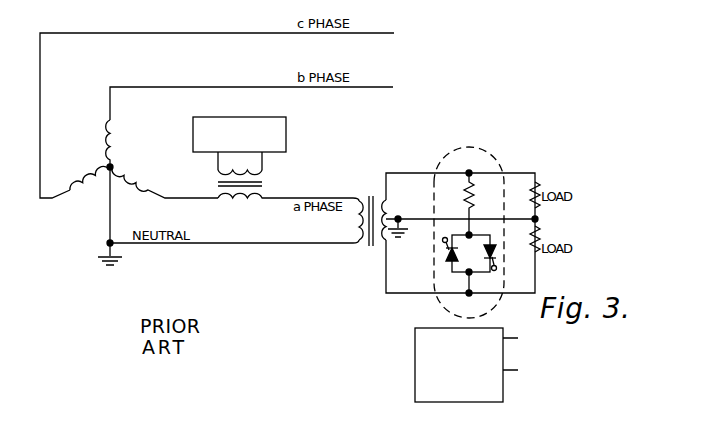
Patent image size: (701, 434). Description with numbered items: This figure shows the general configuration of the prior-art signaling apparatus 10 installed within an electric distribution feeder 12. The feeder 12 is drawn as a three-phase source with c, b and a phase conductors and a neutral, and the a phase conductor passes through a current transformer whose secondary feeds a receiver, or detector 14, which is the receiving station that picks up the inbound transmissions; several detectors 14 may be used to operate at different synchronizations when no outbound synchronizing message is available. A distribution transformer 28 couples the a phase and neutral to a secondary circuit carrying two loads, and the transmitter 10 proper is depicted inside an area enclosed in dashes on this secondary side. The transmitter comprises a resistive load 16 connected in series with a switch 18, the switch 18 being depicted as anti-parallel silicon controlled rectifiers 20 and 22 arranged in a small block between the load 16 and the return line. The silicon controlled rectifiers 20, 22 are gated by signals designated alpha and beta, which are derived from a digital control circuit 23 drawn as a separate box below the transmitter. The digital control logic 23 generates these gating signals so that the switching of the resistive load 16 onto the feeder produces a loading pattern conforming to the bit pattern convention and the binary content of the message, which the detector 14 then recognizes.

The signaling apparatus 10 is at (480, 147).
The electric distribution feeder 12 is at (251, 219).
The receiver (detector) 14 is at (283, 129).
The resistive load 16 is at (472, 199).
The switch 18 is at (467, 270).
The silicon controlled rectifier 20 is at (452, 258).
The silicon controlled rectifier 22 is at (508, 266).
The digital control circuit 23 is at (415, 334).
The distribution transformer 28 is at (368, 196).